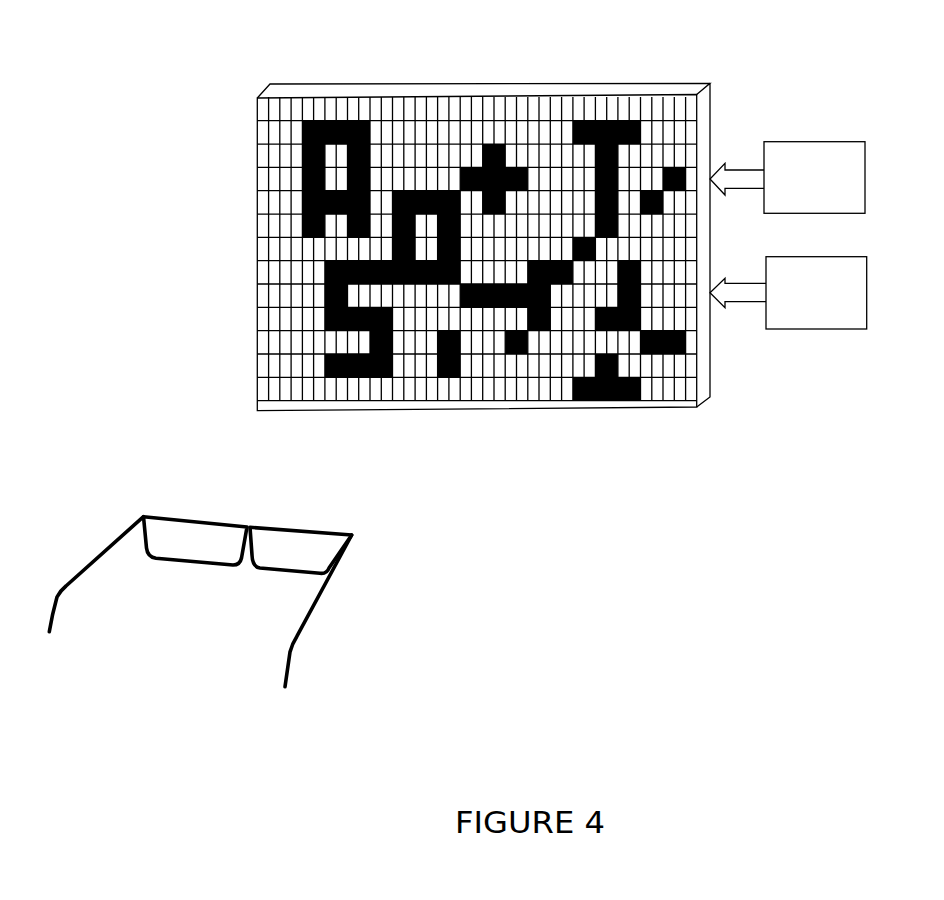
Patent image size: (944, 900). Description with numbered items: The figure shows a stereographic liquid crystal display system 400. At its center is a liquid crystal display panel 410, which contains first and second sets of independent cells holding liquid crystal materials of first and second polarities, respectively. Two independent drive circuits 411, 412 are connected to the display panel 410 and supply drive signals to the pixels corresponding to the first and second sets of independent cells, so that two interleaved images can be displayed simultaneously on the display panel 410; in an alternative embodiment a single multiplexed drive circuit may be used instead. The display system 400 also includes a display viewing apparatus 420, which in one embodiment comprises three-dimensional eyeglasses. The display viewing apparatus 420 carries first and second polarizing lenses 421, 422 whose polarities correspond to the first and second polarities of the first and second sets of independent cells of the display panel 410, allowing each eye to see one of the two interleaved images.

The stereographic liquid crystal display system 400 is at (185, 312).
The liquid crystal display panel 410 is at (663, 83).
The drive circuit 411 is at (835, 142).
The drive circuit 412 is at (838, 257).
The display viewing apparatus 420 is at (396, 598).
The first polarizing lens 421 is at (200, 535).
The second polarizing lens 422 is at (302, 542).